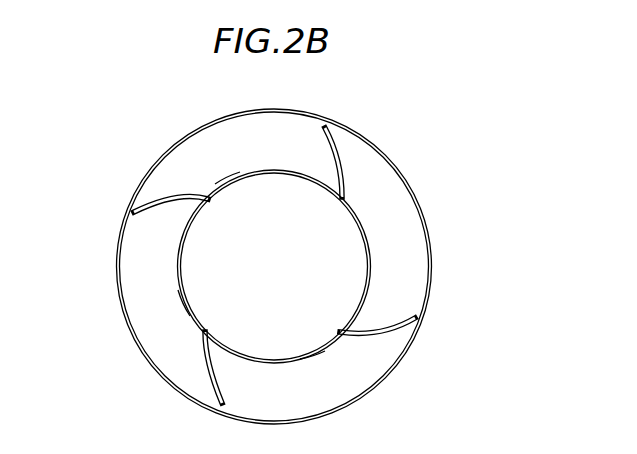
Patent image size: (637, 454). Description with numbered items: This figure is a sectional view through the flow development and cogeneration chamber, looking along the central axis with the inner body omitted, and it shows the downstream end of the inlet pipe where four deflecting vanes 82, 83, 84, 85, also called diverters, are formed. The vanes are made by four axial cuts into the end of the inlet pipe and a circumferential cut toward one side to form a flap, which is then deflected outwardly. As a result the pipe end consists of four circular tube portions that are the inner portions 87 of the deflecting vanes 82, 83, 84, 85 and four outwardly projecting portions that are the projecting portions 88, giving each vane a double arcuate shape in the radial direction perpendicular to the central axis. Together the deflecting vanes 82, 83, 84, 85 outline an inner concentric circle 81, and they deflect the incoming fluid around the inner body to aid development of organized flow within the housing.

The inner concentric circle 81 is at (318, 282).
The deflecting vane 82 is at (360, 222).
The deflecting vane 83 is at (340, 333).
The deflecting vane 84 is at (182, 303).
The deflecting vane 85 is at (227, 178).
The inner portion 87 is at (312, 355).
The projecting portion 88 is at (342, 150).